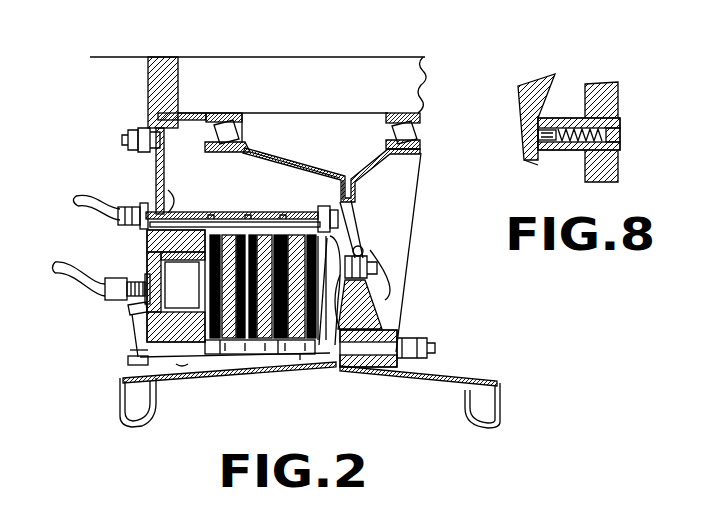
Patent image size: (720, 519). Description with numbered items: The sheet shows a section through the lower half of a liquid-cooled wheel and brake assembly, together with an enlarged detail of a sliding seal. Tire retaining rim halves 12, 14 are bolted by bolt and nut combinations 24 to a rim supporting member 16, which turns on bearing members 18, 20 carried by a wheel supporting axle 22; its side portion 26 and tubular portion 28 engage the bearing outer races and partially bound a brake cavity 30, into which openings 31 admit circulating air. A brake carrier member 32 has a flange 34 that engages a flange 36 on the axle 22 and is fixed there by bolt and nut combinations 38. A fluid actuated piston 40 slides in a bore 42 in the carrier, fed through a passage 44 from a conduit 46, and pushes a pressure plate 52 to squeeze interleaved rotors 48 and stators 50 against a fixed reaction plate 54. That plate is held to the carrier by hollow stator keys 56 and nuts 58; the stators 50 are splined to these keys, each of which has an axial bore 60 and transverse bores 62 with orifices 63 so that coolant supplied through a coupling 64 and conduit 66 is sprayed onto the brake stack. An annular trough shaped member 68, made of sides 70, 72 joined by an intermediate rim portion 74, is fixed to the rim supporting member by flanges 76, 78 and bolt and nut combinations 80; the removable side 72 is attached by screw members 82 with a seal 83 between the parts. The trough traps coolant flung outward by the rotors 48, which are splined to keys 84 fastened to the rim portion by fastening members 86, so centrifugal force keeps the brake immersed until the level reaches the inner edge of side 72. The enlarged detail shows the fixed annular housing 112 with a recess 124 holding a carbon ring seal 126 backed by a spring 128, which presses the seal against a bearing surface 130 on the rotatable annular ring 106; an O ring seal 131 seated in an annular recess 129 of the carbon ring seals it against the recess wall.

In FIG. 2, the tire retaining rim half 12 is at (172, 381).
In FIG. 2, the tire retaining rim half 14 is at (455, 384).
In FIG. 2, the rim supporting member 16 is at (410, 205).
In FIG. 2, the bearing member 18 is at (420, 98).
In FIG. 2, the bearing member 20 is at (233, 112).
In FIG. 2, the wheel supporting axle 22 is at (346, 76).
In FIG. 2, the bolt and nut combinations 24 is at (427, 349).
In FIG. 2, the side portion 26 is at (400, 283).
In FIG. 2, the tubular portion 28 is at (302, 163).
In FIG. 2, the brake cavity 30 is at (259, 167).
In FIG. 2, the openings 31 is at (349, 200).
In FIG. 2, the brake carrier member 32 is at (158, 243).
In FIG. 2, the flange 34 is at (165, 173).
In FIG. 2, the flange 36 is at (148, 160).
In FIG. 2, the bolt and nut combinations 38 is at (135, 128).
In FIG. 2, the fluid actuated piston 40 is at (130, 312).
In FIG. 2, the bore 42 is at (182, 285).
In FIG. 2, the passage 44 is at (135, 277).
In FIG. 2, the conduit 46 is at (76, 291).
In FIG. 2, the rotors 48 is at (222, 354).
In FIG. 2, the stators 50 is at (280, 354).
In FIG. 2, the pressure plate 52 is at (207, 357).
In FIG. 2, the reaction plate 54 is at (326, 248).
In FIG. 2, the stator keys 56 is at (227, 212).
In FIG. 2, the nuts 58 is at (334, 222).
In FIG. 2, the axial bore 60 is at (170, 190).
In FIG. 2, the transverse bores 62 is at (287, 236).
In FIG. 2, the orifices 63 is at (208, 210).
In FIG. 2, the coupling 64 is at (125, 213).
In FIG. 2, the conduit 66 is at (78, 214).
In FIG. 2, the trough shaped member 68 is at (100, 406).
In FIG. 2, the side 70 is at (337, 368).
In FIG. 2, the side 72 is at (130, 334).
In FIG. 2, the intermediate rim portion 74 is at (256, 355).
In FIG. 2, the flange 76 is at (380, 312).
In FIG. 2, the flange 78 is at (362, 260).
In FIG. 2, the bolt and nut combinations 80 is at (378, 270).
In FIG. 2, the screw members 82 is at (128, 359).
In FIG. 2, the seal 83 is at (130, 350).
In FIG. 2, the keys 84 is at (302, 360).
In FIG. 2, the fastening members 86 is at (182, 366).
In FIG. 8, the annular ring 106 is at (520, 100).
In FIG. 8, the annular housing 112 is at (618, 168).
In FIG. 8, the recess 124 is at (620, 137).
In FIG. 8, the carbon ring seal 126 is at (546, 142).
In FIG. 8, the spring 128 is at (605, 120).
In FIG. 8, the annular recess 129 is at (538, 136).
In FIG. 8, the bearing surface 130 is at (534, 164).
In FIG. 8, the O ring seal 131 is at (572, 128).